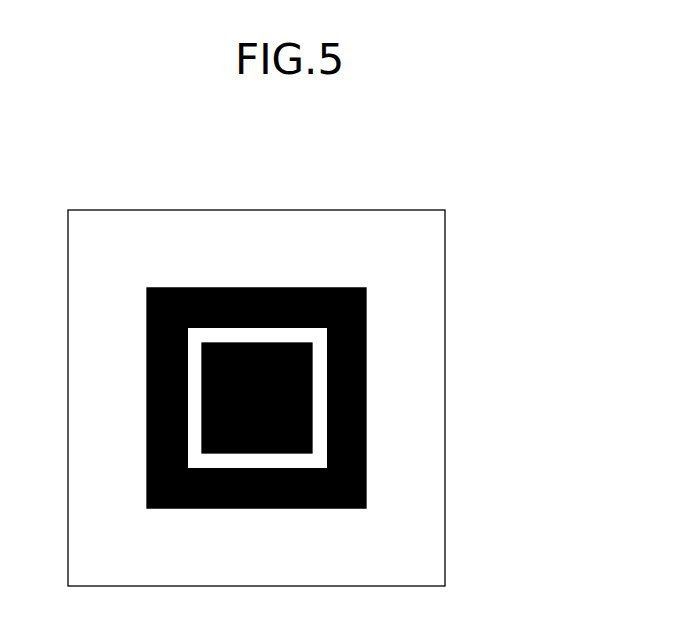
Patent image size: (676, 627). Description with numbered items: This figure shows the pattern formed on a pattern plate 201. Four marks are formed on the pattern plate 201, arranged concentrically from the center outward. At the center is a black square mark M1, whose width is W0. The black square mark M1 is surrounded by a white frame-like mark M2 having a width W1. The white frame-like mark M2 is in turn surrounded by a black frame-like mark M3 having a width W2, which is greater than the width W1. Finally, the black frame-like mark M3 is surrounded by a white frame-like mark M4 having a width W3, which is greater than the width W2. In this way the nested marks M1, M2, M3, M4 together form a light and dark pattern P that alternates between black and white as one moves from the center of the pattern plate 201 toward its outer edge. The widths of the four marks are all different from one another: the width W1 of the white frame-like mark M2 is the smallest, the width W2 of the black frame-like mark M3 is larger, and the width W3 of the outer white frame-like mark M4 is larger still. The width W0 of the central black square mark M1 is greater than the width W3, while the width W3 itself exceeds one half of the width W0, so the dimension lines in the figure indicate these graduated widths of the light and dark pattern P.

The pattern plate 201 is at (283, 208).
The light and dark pattern P is at (393, 283).
The black square mark M1 is at (265, 340).
The white frame-like mark M2 is at (302, 335).
The black frame-like mark M3 is at (367, 317).
The white frame-like mark M4 is at (413, 385).
The width of mark M1 W0 is at (312, 533).
The width of mark M2 W1 is at (227, 252).
The width of mark M3 W2 is at (187, 252).
The width of mark M4 W3 is at (147, 385).